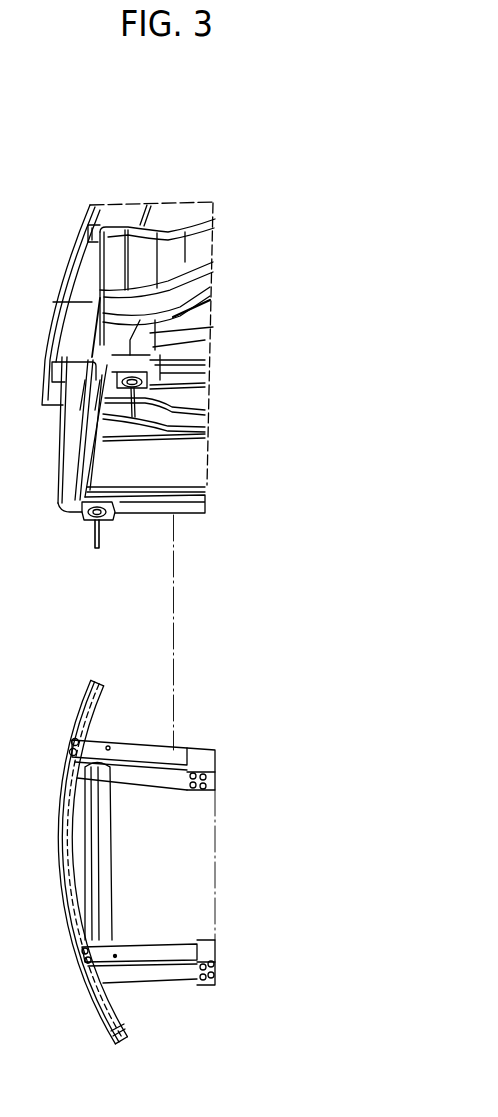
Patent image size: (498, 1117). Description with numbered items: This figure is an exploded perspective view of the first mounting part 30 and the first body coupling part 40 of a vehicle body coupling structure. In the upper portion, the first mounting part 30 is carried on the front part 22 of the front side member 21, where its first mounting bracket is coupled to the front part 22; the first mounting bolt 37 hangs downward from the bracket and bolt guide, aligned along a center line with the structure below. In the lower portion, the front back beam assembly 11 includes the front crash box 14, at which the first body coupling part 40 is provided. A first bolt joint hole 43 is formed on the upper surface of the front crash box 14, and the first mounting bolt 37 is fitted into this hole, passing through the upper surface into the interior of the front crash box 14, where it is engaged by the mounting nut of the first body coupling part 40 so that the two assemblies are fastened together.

The front back beam assembly 11 is at (136, 877).
The front crash box 14 is at (155, 777).
The front side member 21 is at (162, 385).
The front part 22 is at (117, 517).
The first mounting part 30 is at (82, 522).
The first mounting bolt 37 is at (98, 537).
The first body coupling part 40 is at (108, 748).
The first bolt joint hole 43 is at (102, 747).